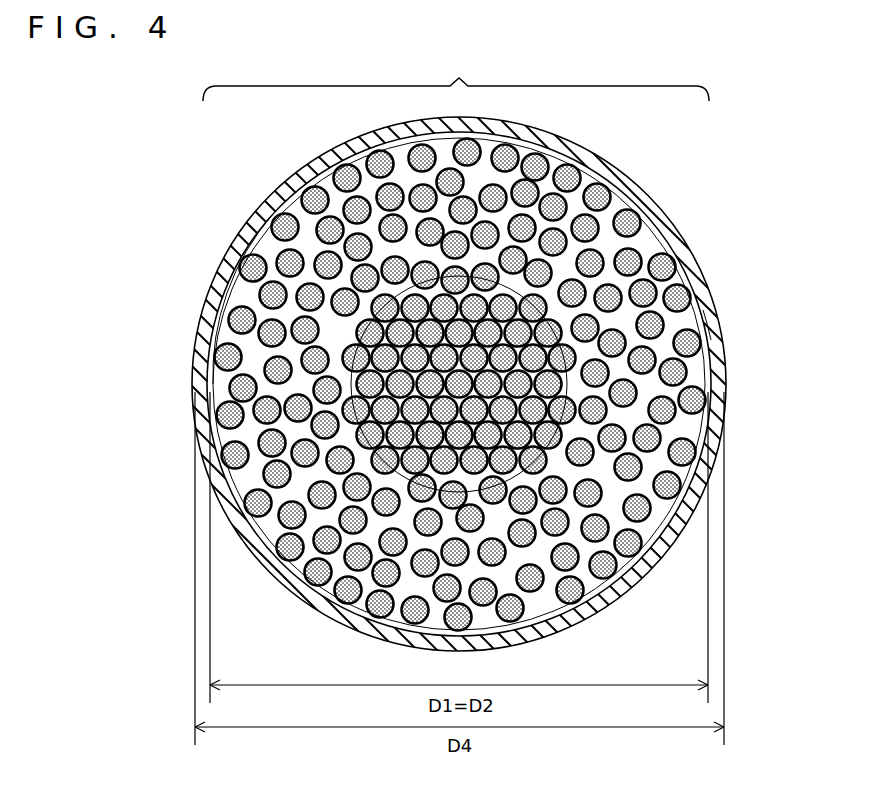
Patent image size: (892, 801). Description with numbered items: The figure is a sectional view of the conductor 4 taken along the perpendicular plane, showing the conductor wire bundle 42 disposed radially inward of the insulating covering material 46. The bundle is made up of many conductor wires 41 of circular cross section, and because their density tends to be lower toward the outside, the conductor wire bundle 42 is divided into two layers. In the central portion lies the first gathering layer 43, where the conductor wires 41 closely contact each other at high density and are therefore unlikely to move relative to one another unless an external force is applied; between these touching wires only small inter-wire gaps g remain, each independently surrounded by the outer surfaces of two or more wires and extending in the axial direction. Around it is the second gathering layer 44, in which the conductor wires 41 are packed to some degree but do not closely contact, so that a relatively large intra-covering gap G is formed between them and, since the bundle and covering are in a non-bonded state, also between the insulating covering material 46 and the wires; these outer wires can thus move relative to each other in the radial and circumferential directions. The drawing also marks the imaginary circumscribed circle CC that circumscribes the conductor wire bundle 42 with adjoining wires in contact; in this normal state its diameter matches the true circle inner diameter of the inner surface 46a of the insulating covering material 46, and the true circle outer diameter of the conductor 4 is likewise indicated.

The conductor 4 is at (190, 175).
The conductor wires 41 is at (630, 227).
The conductor wire bundle 42 is at (456, 75).
The first gathering layer 43 is at (527, 448).
The second gathering layer 44 is at (640, 215).
The insulating covering material 46 is at (231, 253).
The inner surface of the insulating covering material 46a is at (222, 331).
The imaginary circumscribed circle CC is at (703, 310).
The inter-wire gap g is at (545, 386).
The intra-covering gap G is at (612, 506).